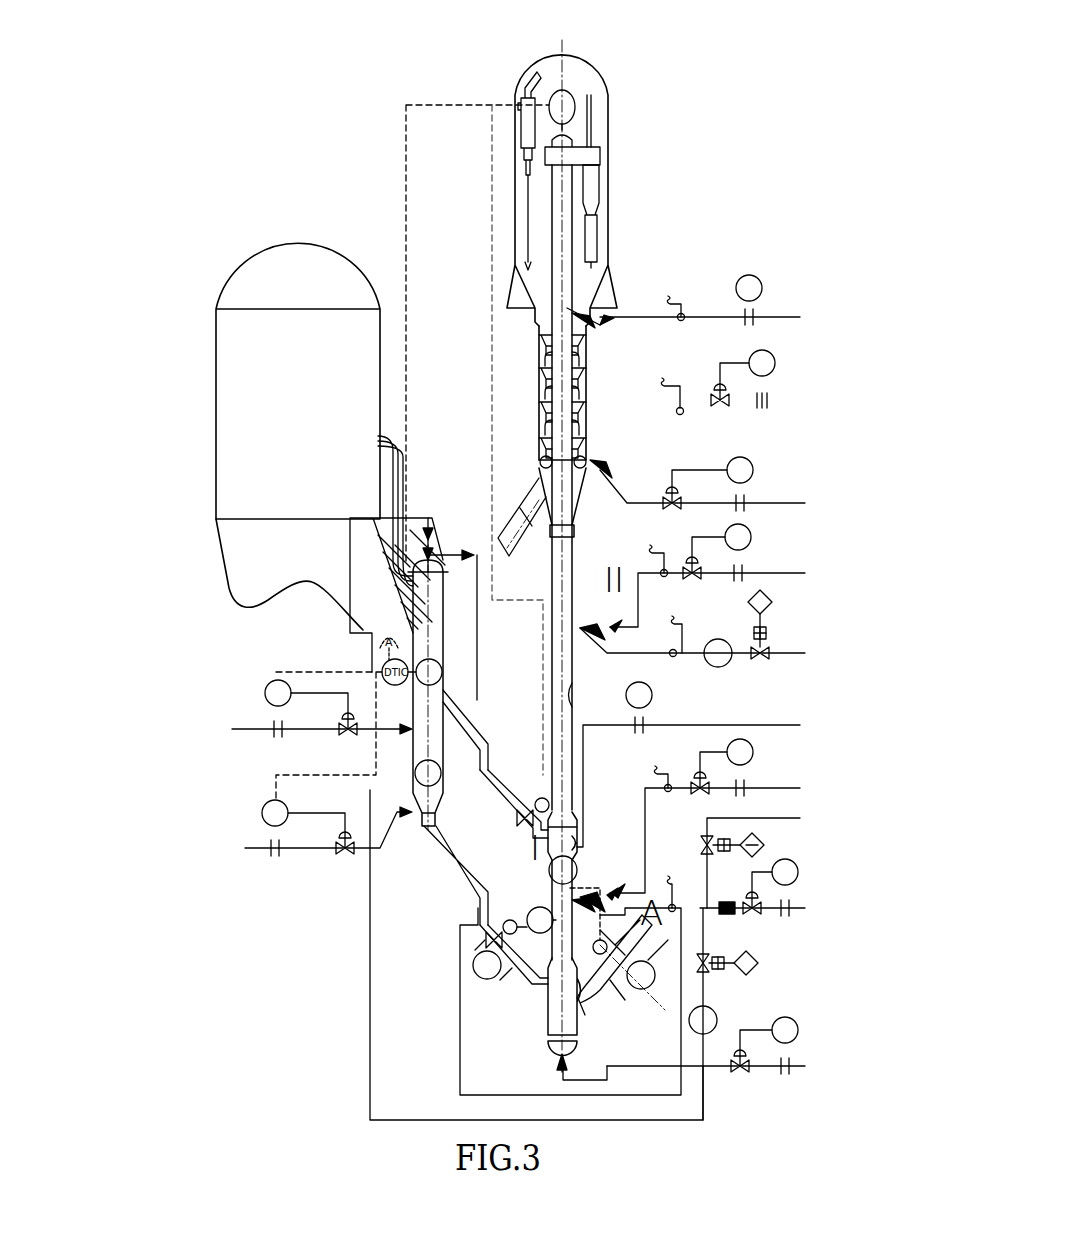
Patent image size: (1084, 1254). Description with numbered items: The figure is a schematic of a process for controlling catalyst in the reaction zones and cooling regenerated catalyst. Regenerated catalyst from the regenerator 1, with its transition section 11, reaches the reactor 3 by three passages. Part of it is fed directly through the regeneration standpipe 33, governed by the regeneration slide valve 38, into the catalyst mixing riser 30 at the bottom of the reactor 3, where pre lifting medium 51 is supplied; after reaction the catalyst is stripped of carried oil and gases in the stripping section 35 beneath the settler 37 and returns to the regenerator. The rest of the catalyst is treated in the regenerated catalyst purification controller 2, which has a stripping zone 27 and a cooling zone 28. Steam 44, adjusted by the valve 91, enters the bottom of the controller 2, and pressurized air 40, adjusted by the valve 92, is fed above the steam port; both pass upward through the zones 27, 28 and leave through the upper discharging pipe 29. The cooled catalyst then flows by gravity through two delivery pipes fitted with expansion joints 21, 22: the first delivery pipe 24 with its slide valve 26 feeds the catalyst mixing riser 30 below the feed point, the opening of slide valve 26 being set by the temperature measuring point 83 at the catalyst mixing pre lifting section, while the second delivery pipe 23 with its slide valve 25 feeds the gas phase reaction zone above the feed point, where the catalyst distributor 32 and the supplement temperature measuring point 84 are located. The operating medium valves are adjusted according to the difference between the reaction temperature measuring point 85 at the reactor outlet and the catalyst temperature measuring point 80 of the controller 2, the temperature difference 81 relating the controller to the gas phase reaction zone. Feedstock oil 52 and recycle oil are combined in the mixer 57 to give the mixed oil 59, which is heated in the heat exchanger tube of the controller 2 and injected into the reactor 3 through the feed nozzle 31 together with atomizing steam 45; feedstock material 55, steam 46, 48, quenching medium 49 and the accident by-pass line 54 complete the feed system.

The regenerator 1 is at (240, 412).
The transition section of regenerator 11 is at (240, 580).
The upper discharging pipe of regenerated catalyst purification controller 29 is at (396, 458).
The difference between the temperatures of the purification controller and the suppl 81 is at (392, 658).
The regenerated catalyst purification controller 2 is at (436, 580).
The cooling zone of regenerated catalyst purification controller 28 is at (435, 610).
The catalyst temperature measuring point of regenerated catalyst purification contro 80 is at (441, 668).
The mixed oil of feedstock oil and recycle oil 59 is at (429, 520).
The stripping zone of regenerated catalyst purification controller 27 is at (432, 753).
The expansion joint 21 is at (505, 703).
The catalyst delivery pipe of regenerated catalyst purification controller 23 is at (503, 790).
The slide valve in catalyst delivery pipe of regenerated catalyst purification contr 25 is at (533, 828).
The expansion joint 22 is at (432, 842).
The catalyst delivery pipe of regenerated catalyst purification controller 24 is at (485, 900).
The slide valve in catalyst delivery pipe of regenerated catalyst purification contr 26 is at (486, 942).
The temperature measuring point at catalyst mixing pre lifting section 83 is at (547, 908).
The settler 37 is at (610, 132).
The reaction temperature measuring point at the outlet of the reactor 85 is at (549, 95).
The reactor 3 is at (560, 686).
The stripping section 35 is at (546, 400).
The catalyst distributor 32 is at (571, 822).
The supplement temperature measuring point at gas phase reaction zone 84 is at (579, 866).
The feed nozzle 31 is at (625, 888).
The catalyst mixing riser 30 is at (553, 1005).
The regeneration standpipe 33 is at (600, 985).
The regeneration slide valve 38 is at (637, 990).
The pressurized air 40 is at (309, 714).
The valve for adjusting pressurized air fed into regenerated catalyst purification c 92 is at (343, 740).
The steam 44 is at (316, 833).
The valve for adjusting steam fed into regenerated catalyst purification controller 91 is at (350, 835).
The atomizing steam 45 is at (700, 593).
The quenching medium 49 is at (722, 384).
The steam 46 is at (712, 485).
The feedstock material 55 is at (708, 632).
The steam 48 is at (705, 764).
The accident by-pass line 54 is at (758, 852).
The feedstock oil 52 is at (743, 989).
The feedstock oil and recycle oil mixer 57 is at (727, 914).
The pre lifting medium 51 is at (721, 1050).